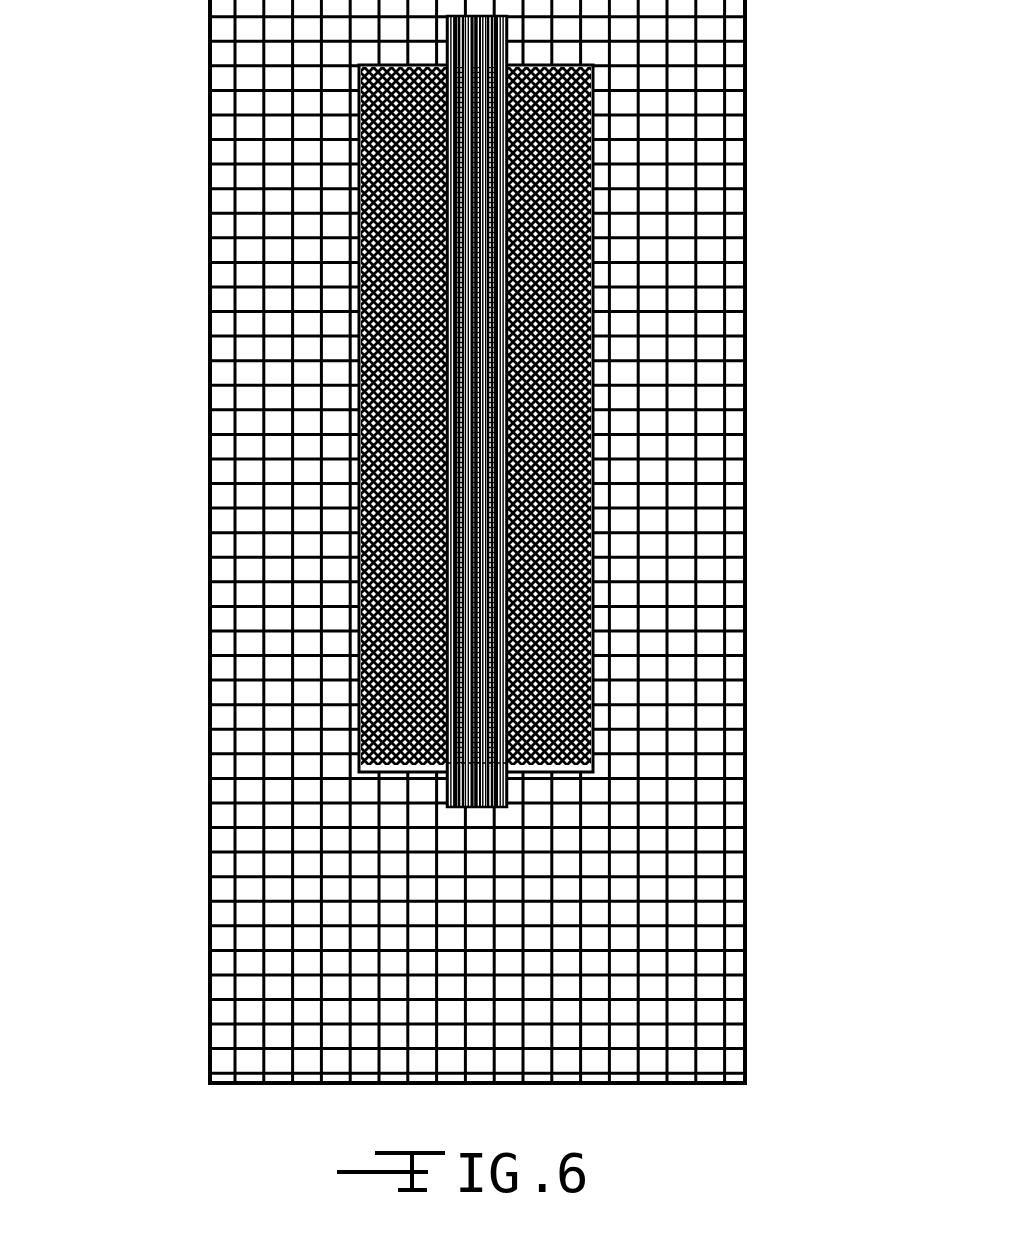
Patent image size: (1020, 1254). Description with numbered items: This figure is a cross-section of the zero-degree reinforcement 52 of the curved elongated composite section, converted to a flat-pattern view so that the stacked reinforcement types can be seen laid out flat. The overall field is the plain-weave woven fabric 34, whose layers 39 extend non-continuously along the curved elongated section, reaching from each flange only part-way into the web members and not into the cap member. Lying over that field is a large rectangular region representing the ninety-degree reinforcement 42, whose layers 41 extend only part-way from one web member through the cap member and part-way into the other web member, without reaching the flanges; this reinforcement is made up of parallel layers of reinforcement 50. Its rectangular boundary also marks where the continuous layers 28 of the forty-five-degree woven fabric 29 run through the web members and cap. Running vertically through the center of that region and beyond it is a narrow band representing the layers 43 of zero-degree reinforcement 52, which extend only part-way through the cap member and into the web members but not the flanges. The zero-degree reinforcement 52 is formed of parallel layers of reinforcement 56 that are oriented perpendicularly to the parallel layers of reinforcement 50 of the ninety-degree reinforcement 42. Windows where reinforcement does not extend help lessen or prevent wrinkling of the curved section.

The layers of 0° reinforcement 43 is at (275, 411).
The 0° reinforcement 52 is at (275, 411).
The parallel layers of reinforcement 56 is at (452, 51).
The layers of 90° reinforcement 41 is at (621, 405).
The 90° reinforcement 42 is at (621, 405).
The parallel layers of reinforcement 50 is at (556, 124).
The layers of 45° woven fabric 28 is at (616, 418).
The 45° woven fabric 29 is at (593, 173).
The 0/90° woven fabric 34 is at (545, 541).
The layers of 0/90° woven fabric 39 is at (710, 250).